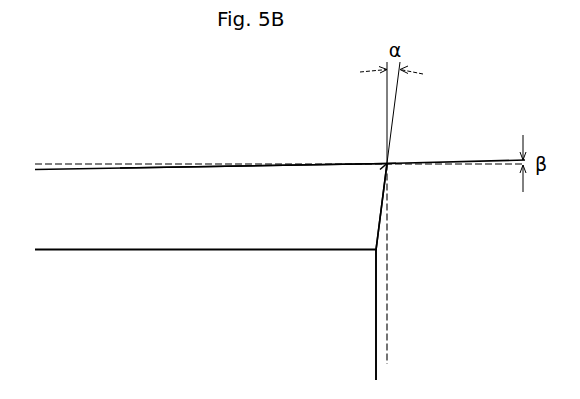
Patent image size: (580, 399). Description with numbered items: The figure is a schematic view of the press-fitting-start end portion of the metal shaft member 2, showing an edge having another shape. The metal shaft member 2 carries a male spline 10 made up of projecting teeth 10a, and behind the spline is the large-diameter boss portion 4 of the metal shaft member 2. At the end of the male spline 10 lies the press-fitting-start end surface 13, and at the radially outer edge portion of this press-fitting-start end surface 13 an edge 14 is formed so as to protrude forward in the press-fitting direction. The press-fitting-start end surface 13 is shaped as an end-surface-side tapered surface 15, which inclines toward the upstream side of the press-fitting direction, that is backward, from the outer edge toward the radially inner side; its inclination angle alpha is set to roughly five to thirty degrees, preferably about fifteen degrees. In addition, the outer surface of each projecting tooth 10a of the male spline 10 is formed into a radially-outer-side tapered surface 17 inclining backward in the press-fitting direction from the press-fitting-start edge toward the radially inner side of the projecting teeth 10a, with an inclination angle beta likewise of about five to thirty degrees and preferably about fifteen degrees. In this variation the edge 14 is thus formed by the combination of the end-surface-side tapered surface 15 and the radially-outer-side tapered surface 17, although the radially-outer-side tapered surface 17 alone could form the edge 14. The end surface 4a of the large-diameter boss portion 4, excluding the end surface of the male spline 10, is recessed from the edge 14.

The metal shaft member 2 is at (237, 136).
The large-diameter boss portion 4 is at (295, 271).
The end surface 4a is at (376, 335).
The male spline 10 is at (118, 166).
The projecting teeth 10a is at (172, 195).
The press-fitting-start end surface 13 is at (386, 200).
The edge 14 is at (389, 163).
The end-surface-side tapered surface 15 is at (380, 233).
The radially-outer-side tapered surface 17 is at (68, 167).